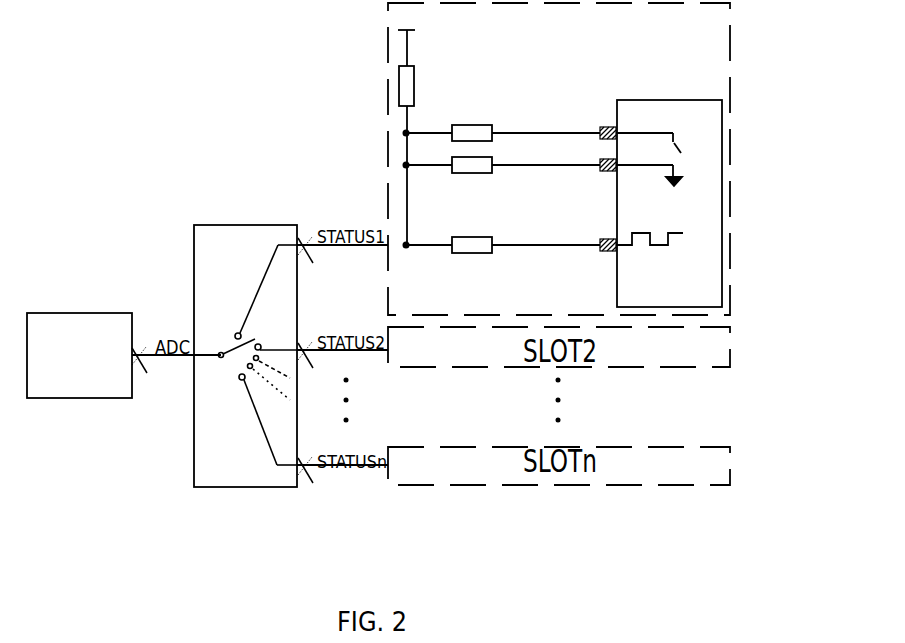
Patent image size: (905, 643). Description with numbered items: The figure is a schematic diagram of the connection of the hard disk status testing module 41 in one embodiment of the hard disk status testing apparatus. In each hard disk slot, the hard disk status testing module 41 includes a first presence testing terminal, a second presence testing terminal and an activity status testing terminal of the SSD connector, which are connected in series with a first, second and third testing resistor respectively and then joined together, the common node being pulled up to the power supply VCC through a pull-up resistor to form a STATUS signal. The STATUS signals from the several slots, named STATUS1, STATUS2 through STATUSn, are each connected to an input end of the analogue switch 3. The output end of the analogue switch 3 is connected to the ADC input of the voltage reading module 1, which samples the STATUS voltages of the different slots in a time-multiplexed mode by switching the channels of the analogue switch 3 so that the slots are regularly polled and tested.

The voltage reading module 1 is at (69, 312).
The analogue switch 3 is at (263, 224).
The hard disk status testing module 41 is at (733, 68).